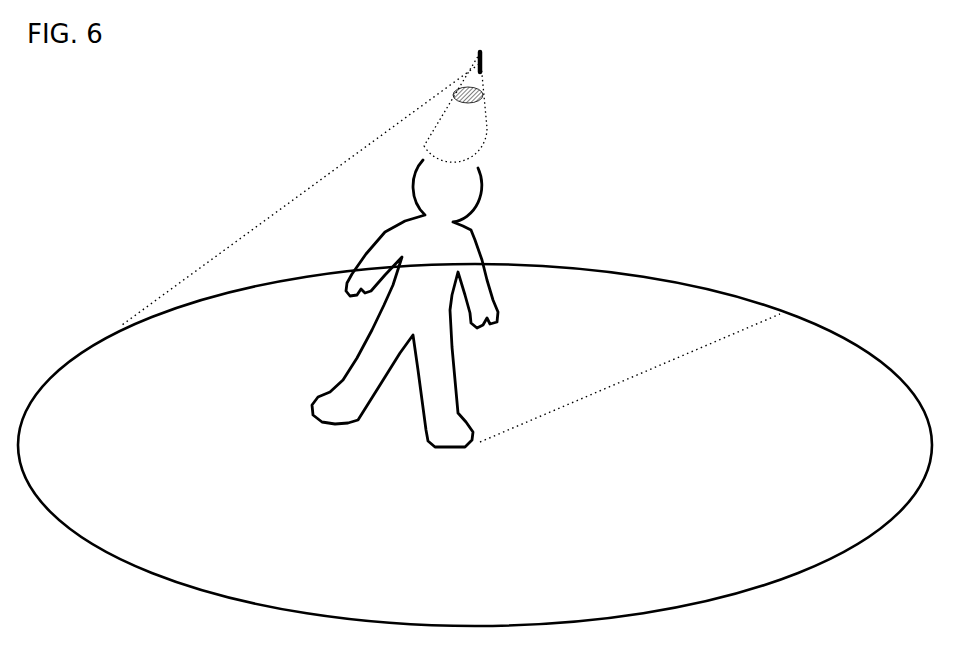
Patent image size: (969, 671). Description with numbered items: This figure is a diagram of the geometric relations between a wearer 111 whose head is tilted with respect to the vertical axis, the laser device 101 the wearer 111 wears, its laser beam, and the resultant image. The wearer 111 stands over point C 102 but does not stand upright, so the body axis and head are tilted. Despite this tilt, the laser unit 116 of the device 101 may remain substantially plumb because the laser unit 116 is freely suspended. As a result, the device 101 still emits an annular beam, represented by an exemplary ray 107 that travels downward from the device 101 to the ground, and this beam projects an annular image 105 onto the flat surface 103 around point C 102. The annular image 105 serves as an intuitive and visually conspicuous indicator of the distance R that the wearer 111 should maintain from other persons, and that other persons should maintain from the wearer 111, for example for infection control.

The device 101 is at (476, 107).
The point C 102 is at (475, 484).
The flat surface 103 is at (494, 394).
The annular image 105 is at (475, 445).
The ray 107 is at (300, 192).
The wearer 111 is at (405, 303).
The laser unit 116 is at (490, 72).